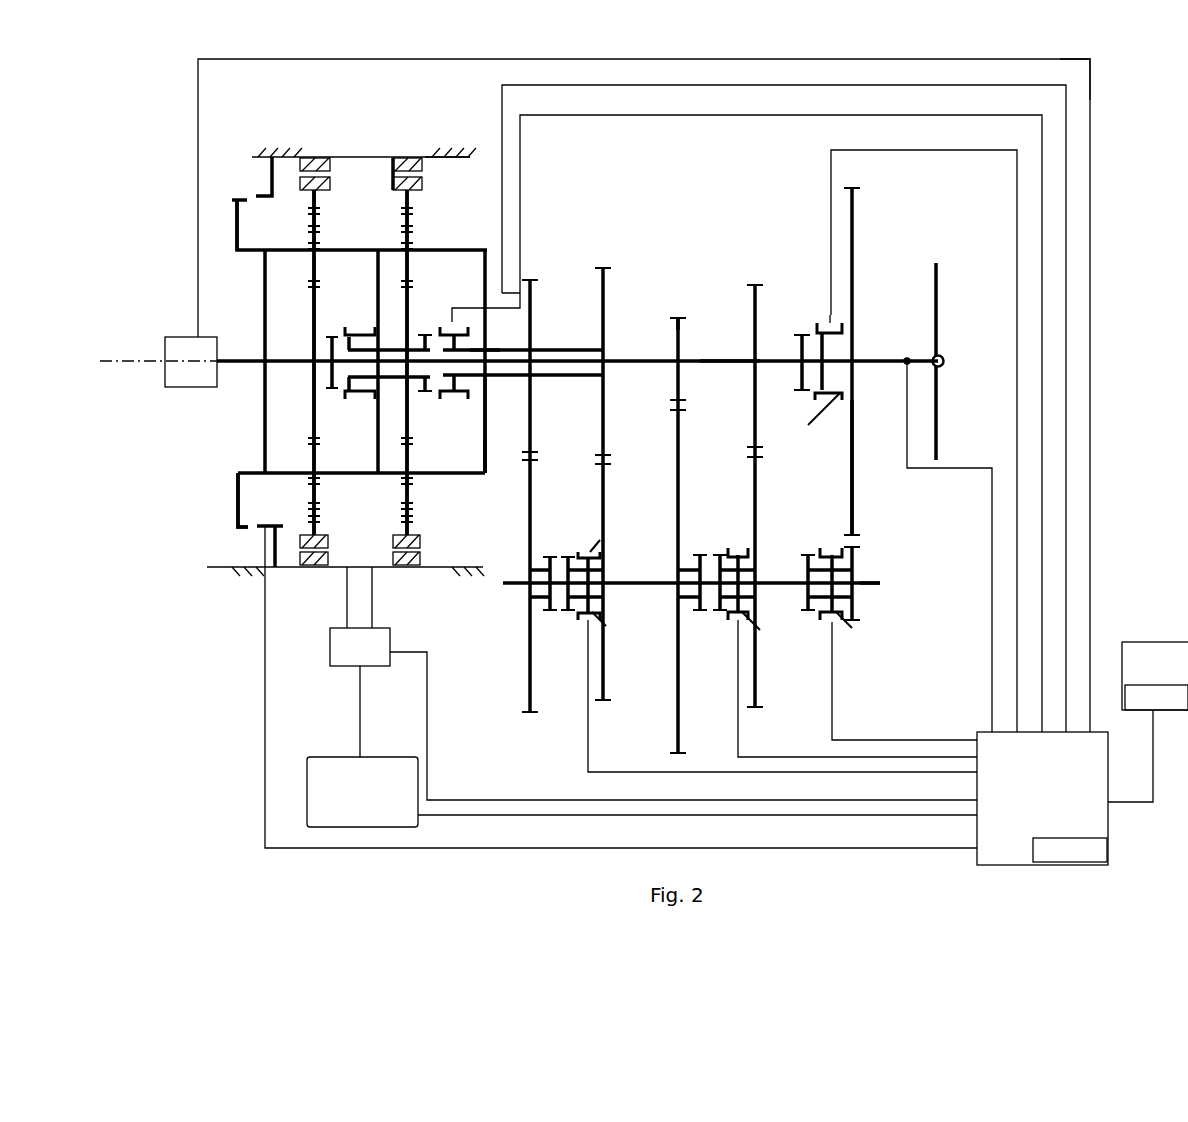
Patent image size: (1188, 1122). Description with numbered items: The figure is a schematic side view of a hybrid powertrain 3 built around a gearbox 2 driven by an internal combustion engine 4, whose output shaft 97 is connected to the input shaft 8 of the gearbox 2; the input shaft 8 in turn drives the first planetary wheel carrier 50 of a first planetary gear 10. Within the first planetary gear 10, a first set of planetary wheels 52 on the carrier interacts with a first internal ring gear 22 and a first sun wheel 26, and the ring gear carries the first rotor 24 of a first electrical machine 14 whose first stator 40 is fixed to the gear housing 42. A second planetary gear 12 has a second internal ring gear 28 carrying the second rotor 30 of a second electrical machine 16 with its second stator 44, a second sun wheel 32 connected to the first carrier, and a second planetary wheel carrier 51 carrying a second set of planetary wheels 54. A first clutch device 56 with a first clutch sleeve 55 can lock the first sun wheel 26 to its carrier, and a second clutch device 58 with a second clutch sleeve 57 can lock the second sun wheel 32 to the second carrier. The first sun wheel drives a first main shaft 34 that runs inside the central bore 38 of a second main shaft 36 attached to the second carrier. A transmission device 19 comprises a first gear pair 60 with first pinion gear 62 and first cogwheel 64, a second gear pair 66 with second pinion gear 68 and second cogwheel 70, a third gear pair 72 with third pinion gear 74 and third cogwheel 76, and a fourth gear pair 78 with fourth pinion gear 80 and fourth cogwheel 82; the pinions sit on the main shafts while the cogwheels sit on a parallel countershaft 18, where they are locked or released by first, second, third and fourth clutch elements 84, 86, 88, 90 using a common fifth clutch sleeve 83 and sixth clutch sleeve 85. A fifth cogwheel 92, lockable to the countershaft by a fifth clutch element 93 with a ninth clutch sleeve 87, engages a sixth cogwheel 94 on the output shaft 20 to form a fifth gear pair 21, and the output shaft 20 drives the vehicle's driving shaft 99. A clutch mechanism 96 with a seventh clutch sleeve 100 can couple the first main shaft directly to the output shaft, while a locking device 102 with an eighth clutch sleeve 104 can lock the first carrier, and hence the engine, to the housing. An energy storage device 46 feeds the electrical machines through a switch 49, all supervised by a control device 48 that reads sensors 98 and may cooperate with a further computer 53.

The gearbox 2 is at (1105, 130).
The hybrid powertrain 3 is at (252, 652).
The internal combustion engine 4 is at (168, 337).
The input shaft 8 is at (245, 358).
The first planetary gear 10 is at (185, 202).
The second planetary gear 12 is at (526, 195).
The first electrical machine 14 is at (185, 137).
The second electrical machine 16 is at (480, 178).
The countershaft 18 is at (660, 600).
The transmission device 19 is at (678, 207).
The output shaft 20 is at (876, 352).
The fifth gear pair 21 is at (888, 536).
The first internal ring gear 22 is at (307, 210).
The first rotor 24 is at (333, 155).
The first sun wheel 26 is at (307, 387).
The second internal ring gear 28 is at (411, 210).
The second rotor 30 is at (400, 157).
The second sun wheel 32 is at (440, 326).
The first main shaft 34 is at (728, 352).
The second main shaft 36 is at (515, 380).
The central bore 38 is at (630, 352).
The first stator 40 is at (287, 154).
The gear housing 42 is at (387, 152).
The second stator 44 is at (428, 152).
The energy storage device 46 is at (390, 755).
The control device 48 is at (980, 730).
The switch 49 is at (345, 670).
The first planetary wheel carrier 50 is at (290, 257).
The second planetary wheel carrier 51 is at (488, 447).
The first set of planetary wheels 52 is at (320, 260).
The computer 53 is at (1152, 642).
The second set of planetary wheels 54 is at (410, 273).
The first clutch sleeve 55 is at (360, 398).
The first clutch device 56 is at (340, 333).
The second clutch sleeve 57 is at (455, 399).
The second clutch device 58 is at (490, 346).
The first gear pair 60 is at (678, 299).
The first pinion gear 62 is at (685, 404).
The first cogwheel 64 is at (683, 455).
The second gear pair 66 is at (606, 250).
The second pinion gear 68 is at (606, 405).
The second cogwheel 70 is at (610, 475).
The third gear pair 72 is at (757, 253).
The third pinion gear 74 is at (760, 397).
The third cogwheel 76 is at (759, 505).
The fourth gear pair 78 is at (532, 257).
The fourth pinion gear 80 is at (535, 396).
The fourth cogwheel 82 is at (532, 526).
The fifth clutch sleeve 83 is at (738, 548).
The first clutch element 84 is at (693, 620).
The sixth clutch sleeve 85 is at (588, 552).
The second clutch element 86 is at (587, 623).
The ninth clutch sleeve 87 is at (833, 547).
The third clutch element 88 is at (760, 612).
The fourth clutch element 90 is at (535, 625).
The fifth cogwheel 92 is at (860, 553).
The fifth clutch element 93 is at (858, 610).
The sixth cogwheel 94 is at (857, 457).
The clutch mechanism 96 is at (796, 300).
The output shaft of the internal combustion engine 97 is at (233, 370).
The sensors 98 is at (910, 358).
The driving shaft 99 is at (940, 312).
The seventh clutch sleeve 100 is at (823, 400).
The locking device 102 is at (240, 537).
The eighth clutch sleeve 104 is at (258, 537).